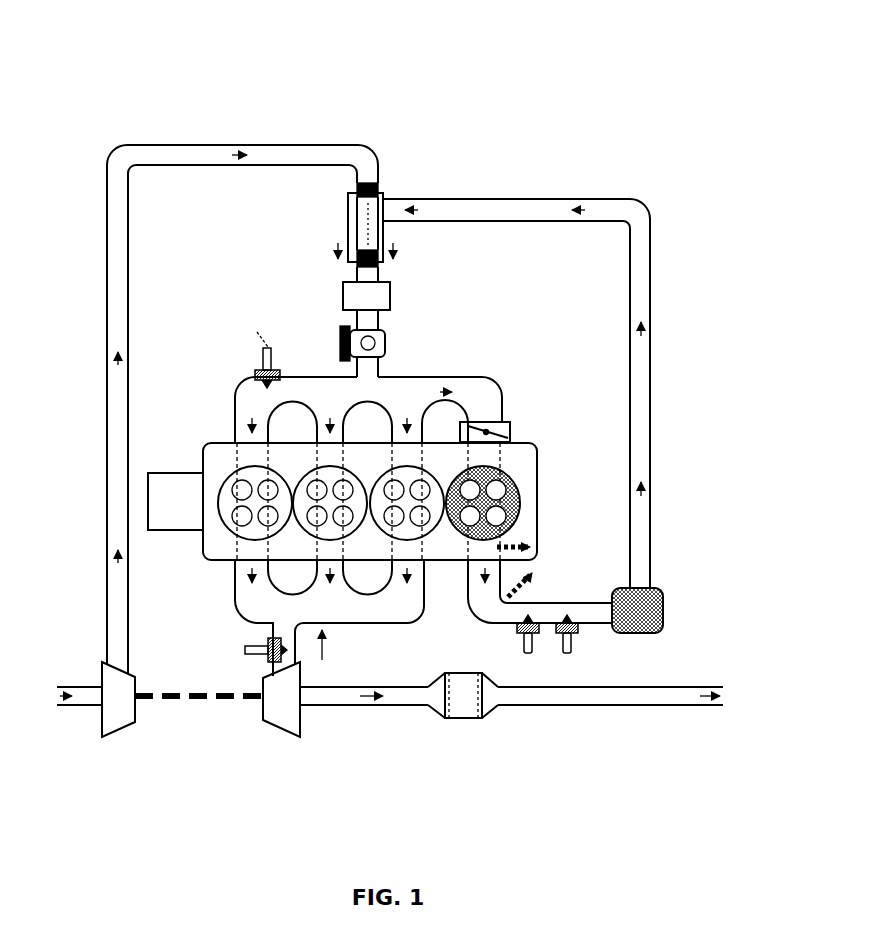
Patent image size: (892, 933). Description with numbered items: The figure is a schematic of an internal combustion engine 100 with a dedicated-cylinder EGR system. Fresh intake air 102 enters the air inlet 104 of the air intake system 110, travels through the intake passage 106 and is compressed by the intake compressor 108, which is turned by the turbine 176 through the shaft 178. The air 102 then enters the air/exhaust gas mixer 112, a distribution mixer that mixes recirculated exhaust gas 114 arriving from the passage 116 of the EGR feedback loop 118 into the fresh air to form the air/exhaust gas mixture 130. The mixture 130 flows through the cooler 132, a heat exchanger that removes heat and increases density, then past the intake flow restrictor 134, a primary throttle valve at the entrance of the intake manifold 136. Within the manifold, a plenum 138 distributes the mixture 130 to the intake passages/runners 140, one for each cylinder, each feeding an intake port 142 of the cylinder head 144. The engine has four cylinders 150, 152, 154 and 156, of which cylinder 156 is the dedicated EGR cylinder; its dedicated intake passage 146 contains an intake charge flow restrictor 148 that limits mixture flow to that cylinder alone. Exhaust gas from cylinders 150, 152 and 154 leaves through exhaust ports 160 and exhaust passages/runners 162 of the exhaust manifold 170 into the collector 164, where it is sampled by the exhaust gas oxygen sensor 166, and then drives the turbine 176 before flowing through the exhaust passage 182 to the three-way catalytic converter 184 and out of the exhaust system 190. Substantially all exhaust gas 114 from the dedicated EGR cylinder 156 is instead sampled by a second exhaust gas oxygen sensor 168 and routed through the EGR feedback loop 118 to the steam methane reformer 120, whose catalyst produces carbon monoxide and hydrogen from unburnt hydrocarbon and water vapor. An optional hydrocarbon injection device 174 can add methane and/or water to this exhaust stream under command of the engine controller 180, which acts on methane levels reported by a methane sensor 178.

The internal combustion engine 100 is at (176, 80).
The intake air 102 is at (74, 661).
The air inlet 104 is at (68, 696).
The intake passage 106 is at (118, 243).
The intake compressor 108 is at (123, 727).
The air intake system 110 is at (390, 124).
The air/exhaust gas mixer 112 is at (388, 191).
The exhaust gas 114 is at (652, 323).
The passage 116 is at (640, 268).
The EGR feedback loop 118 is at (680, 429).
The steam methane reformer 120 is at (688, 597).
The air/exhaust gas mixture 130 is at (437, 257).
The cooler 132 is at (389, 306).
The intake flow restrictor 134 is at (338, 343).
The intake manifold 136 is at (508, 380).
The plenum 138 is at (440, 392).
The intake passage/runner 140 is at (246, 427).
The intake port 142 is at (329, 455).
The cylinder head 144 is at (218, 548).
The intake passage 146 is at (480, 400).
The intake charge flow restrictor 148 is at (499, 423).
The first cylinder 150 is at (259, 501).
The second cylinder 152 is at (335, 501).
The third cylinder 154 is at (412, 501).
The dedicated EGR cylinder 156 is at (517, 476).
The exhaust port 160 is at (329, 550).
The exhaust passage/runner 162 is at (246, 577).
The collector 164 is at (240, 606).
The exhaust gas oxygen sensor 166 is at (243, 648).
The exhaust gas oxygen sensor 168 is at (558, 676).
The exhaust manifold 170 is at (397, 627).
The hydrocarbon injection device 174 is at (452, 632).
The turbine 176 is at (283, 727).
The shaft 178 is at (521, 660).
The engine controller 180 is at (175, 501).
The exhaust passage 182 is at (535, 707).
The catalytic converter 184 is at (463, 722).
The exhaust system 190 is at (498, 788).